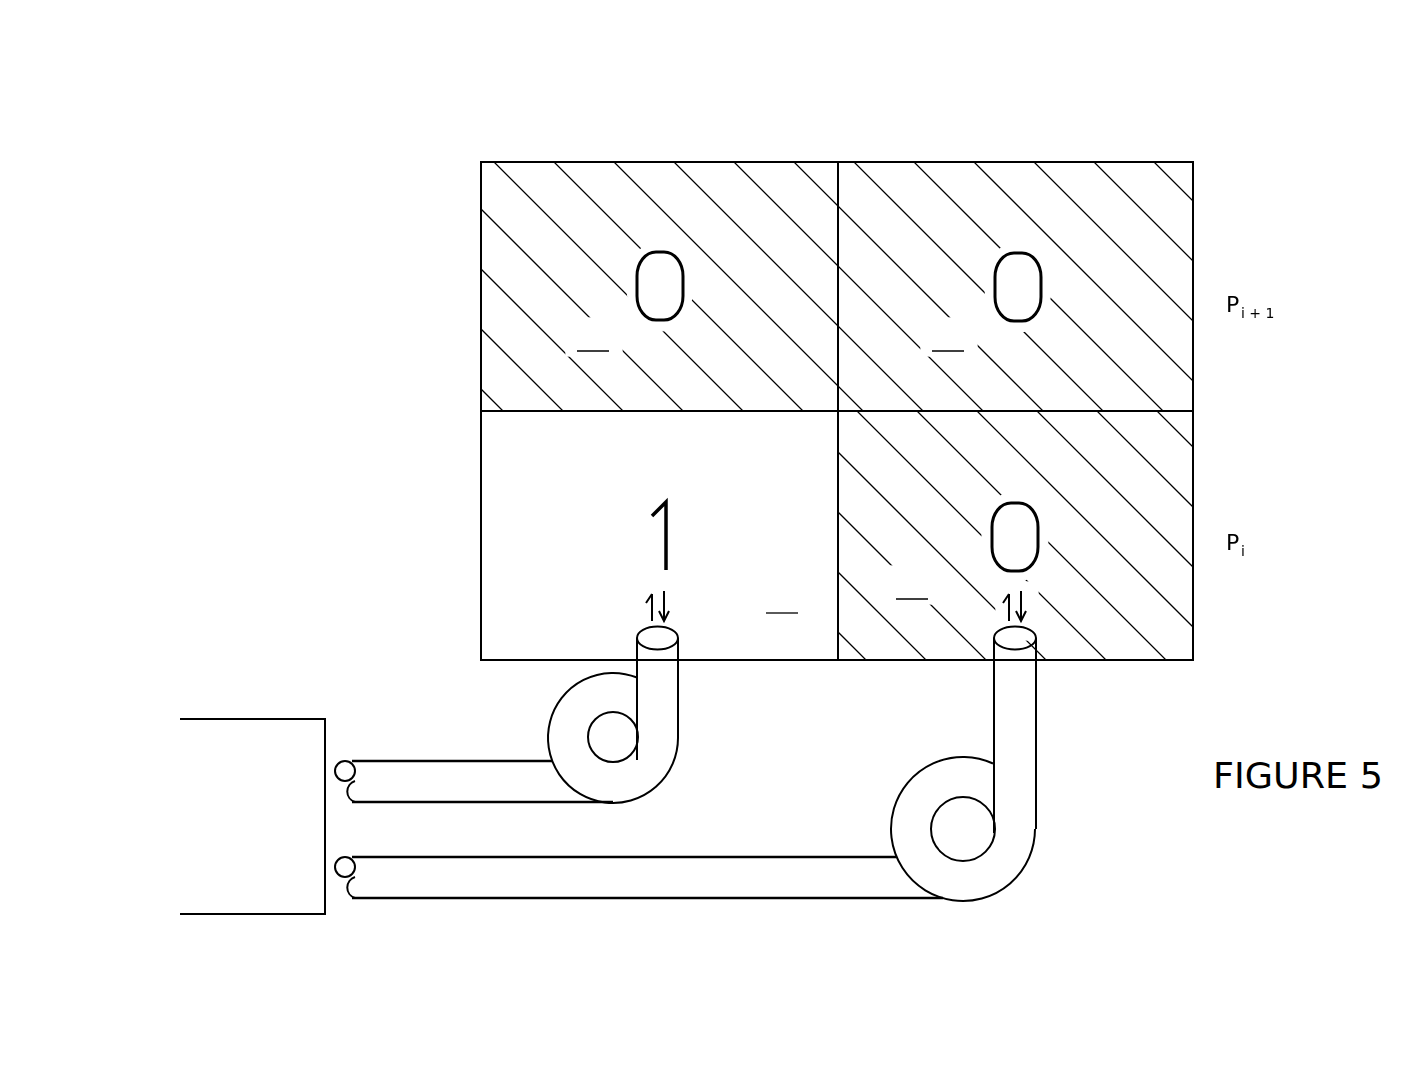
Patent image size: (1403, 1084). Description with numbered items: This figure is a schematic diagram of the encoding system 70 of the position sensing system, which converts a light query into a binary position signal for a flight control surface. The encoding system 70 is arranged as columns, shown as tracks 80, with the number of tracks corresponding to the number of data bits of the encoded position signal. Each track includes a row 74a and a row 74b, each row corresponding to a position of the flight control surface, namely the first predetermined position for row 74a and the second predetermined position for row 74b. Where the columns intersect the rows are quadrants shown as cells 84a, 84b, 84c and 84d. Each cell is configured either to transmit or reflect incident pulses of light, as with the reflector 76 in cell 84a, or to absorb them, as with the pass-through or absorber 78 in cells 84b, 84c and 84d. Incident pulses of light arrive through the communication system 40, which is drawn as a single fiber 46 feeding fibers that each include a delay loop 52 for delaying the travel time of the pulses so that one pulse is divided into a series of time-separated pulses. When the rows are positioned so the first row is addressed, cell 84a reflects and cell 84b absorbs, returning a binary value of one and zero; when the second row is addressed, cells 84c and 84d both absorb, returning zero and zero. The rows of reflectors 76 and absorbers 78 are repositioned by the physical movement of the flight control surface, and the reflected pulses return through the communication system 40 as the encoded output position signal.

The encoding system 70 is at (1282, 87).
The track 80 is at (653, 124).
The row 74a is at (429, 538).
The row 74b is at (424, 294).
The cell 84a is at (493, 626).
The cell 84b is at (1185, 608).
The cell 84c is at (493, 375).
The cell 84d is at (1185, 375).
The absorber 78 is at (809, 425).
The reflector 76 is at (725, 557).
The delay loop 52 is at (667, 778).
The single fiber 46 is at (260, 719).
The communication system 40 is at (1094, 931).